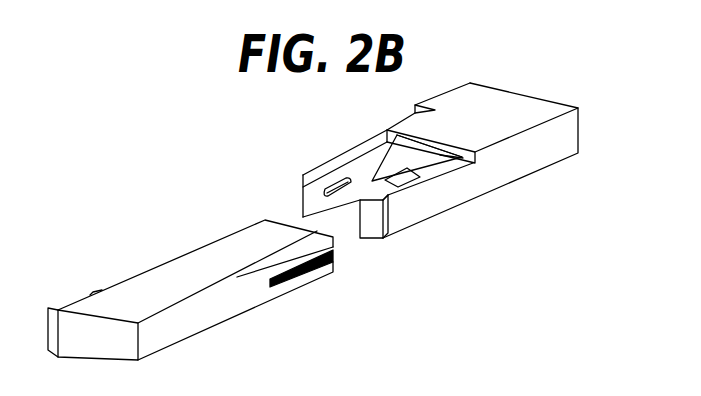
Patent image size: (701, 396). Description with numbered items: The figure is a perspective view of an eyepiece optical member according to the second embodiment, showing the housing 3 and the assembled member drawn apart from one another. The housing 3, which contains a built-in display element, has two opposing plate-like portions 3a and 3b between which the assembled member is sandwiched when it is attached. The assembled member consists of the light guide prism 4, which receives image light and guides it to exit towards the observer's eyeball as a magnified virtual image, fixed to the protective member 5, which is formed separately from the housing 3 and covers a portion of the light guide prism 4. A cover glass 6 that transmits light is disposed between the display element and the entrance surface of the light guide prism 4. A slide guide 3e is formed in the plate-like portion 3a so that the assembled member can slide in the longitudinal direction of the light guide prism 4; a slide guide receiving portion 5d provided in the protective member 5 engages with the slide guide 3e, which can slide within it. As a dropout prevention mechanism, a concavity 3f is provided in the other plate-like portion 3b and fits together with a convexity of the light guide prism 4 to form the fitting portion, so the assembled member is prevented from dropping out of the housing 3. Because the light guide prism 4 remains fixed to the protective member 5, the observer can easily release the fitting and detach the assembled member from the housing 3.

The housing 3 is at (512, 102).
The plate-like portion 3a is at (385, 233).
The plate-like portion 3b is at (302, 180).
The slide guide 3e is at (357, 215).
The concavity 3f is at (345, 178).
The light guide prism 4 is at (193, 253).
The protective member 5 is at (193, 325).
The slide guide receiving portion 5d is at (307, 272).
The cover glass 6 is at (428, 158).